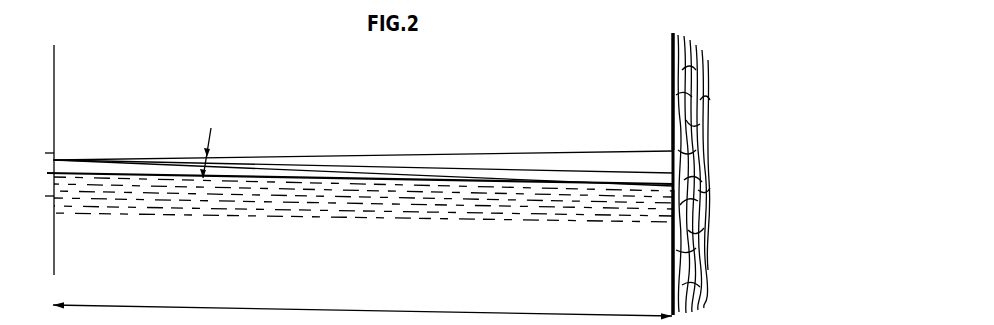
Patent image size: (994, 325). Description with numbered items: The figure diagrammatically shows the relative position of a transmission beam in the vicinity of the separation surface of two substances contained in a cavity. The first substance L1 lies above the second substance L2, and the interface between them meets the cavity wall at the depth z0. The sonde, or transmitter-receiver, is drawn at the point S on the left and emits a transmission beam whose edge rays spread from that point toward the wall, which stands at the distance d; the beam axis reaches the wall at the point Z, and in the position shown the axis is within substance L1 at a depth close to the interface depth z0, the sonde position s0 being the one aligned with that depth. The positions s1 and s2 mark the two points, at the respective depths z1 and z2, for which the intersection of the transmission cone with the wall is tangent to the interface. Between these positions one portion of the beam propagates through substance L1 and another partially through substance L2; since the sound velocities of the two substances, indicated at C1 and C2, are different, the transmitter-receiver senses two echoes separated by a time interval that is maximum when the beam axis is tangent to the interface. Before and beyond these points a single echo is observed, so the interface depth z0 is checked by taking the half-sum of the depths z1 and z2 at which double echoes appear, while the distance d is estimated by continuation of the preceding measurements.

The radiation source / emitter point S is at (383, 175).
The first sonde point s1 is at (41, 140).
The source reference line s0 is at (350, 172).
The second sonde point s2 is at (33, 194).
The first double-echo depth z1 is at (698, 162).
The central ray intersection on wall Z is at (673, 173).
The interface depth z0 is at (384, 181).
The second double-echo depth z2 is at (673, 209).
The first substance L1 is at (168, 102).
The second substance L2 is at (168, 226).
The upper zone of wall C1 is at (466, 91).
The lower zone of wall C2 is at (466, 252).
The distance d is at (362, 301).